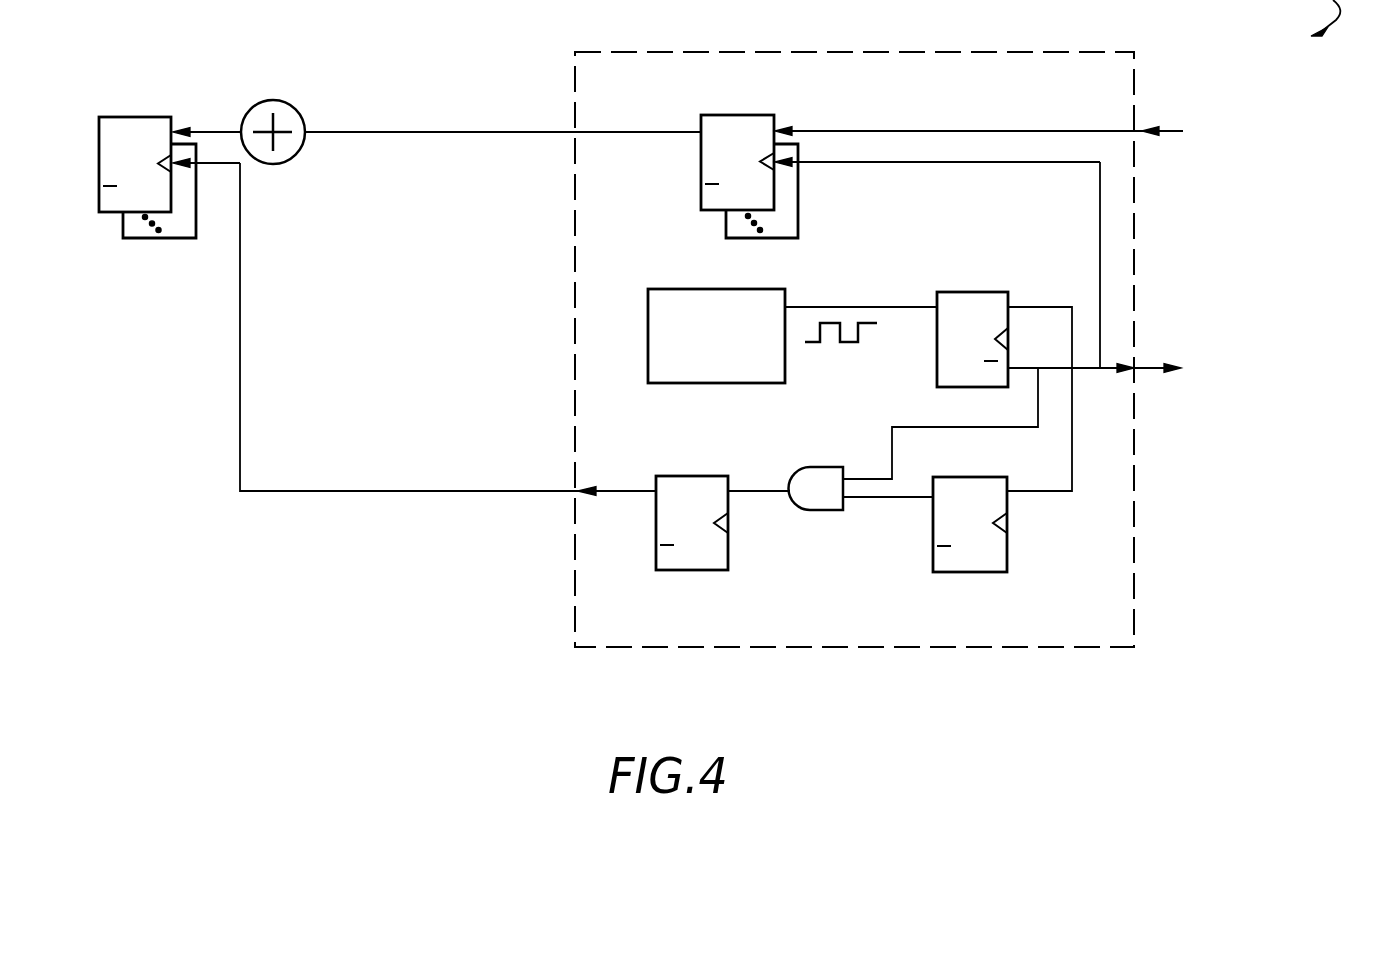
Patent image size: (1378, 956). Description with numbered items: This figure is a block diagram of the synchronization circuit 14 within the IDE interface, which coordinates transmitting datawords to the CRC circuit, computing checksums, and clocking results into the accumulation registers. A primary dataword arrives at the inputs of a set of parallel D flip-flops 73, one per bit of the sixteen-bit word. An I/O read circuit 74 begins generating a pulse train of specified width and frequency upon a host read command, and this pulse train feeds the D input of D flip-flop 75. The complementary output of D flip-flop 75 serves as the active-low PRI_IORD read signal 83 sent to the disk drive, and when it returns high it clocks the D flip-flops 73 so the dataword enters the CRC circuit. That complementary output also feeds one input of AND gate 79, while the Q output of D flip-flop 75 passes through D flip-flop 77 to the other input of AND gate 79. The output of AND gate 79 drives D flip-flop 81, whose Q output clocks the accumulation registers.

The synchronization circuit 14 is at (662, 52).
The D flip-flops 73 is at (735, 113).
The I/O read circuit 74 is at (690, 288).
The D flip-flop 75 is at (966, 291).
The D flip-flop 77 is at (966, 477).
The AND gate 79 is at (815, 466).
The D flip-flop 81 is at (688, 475).
The primary/secondary IORD signal 83 is at (1246, 346).